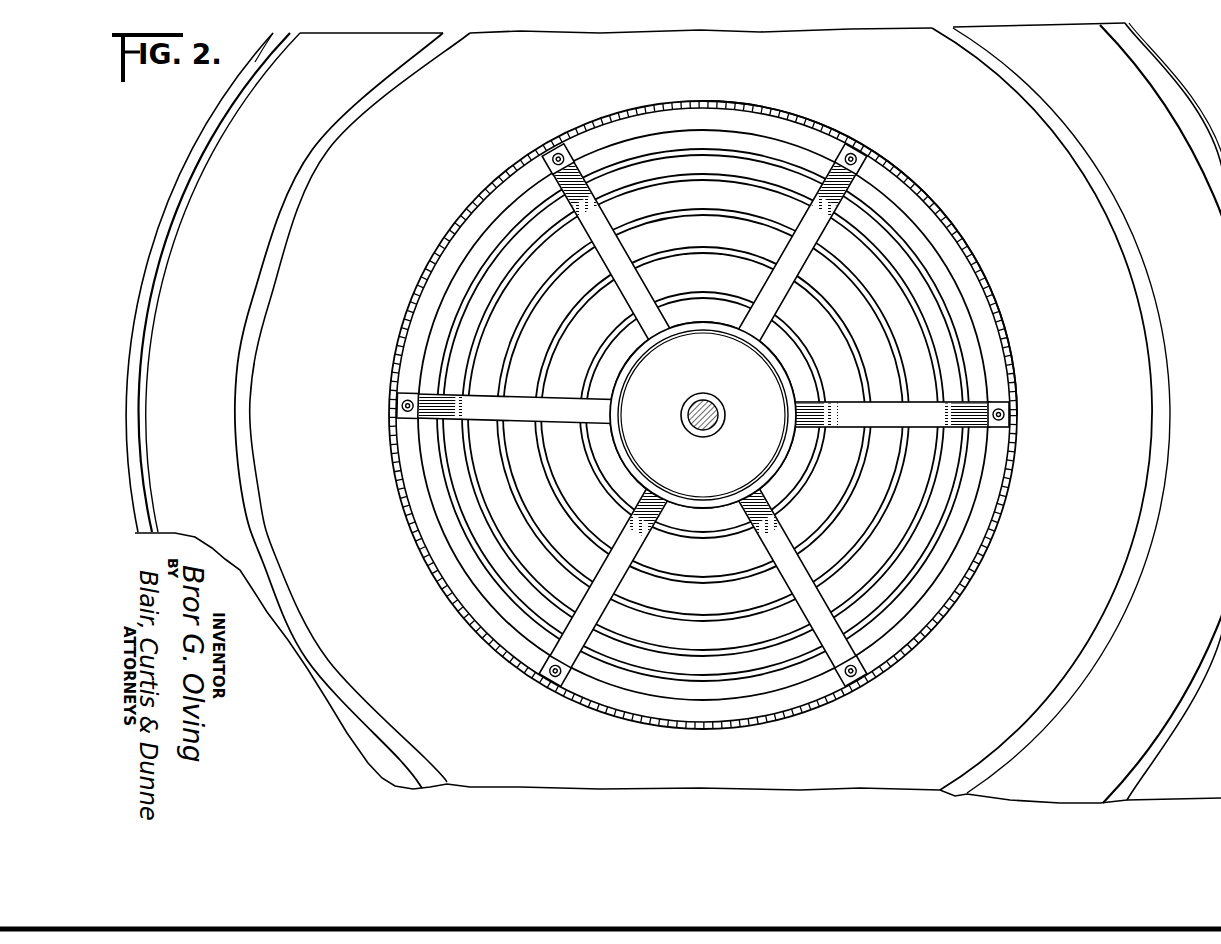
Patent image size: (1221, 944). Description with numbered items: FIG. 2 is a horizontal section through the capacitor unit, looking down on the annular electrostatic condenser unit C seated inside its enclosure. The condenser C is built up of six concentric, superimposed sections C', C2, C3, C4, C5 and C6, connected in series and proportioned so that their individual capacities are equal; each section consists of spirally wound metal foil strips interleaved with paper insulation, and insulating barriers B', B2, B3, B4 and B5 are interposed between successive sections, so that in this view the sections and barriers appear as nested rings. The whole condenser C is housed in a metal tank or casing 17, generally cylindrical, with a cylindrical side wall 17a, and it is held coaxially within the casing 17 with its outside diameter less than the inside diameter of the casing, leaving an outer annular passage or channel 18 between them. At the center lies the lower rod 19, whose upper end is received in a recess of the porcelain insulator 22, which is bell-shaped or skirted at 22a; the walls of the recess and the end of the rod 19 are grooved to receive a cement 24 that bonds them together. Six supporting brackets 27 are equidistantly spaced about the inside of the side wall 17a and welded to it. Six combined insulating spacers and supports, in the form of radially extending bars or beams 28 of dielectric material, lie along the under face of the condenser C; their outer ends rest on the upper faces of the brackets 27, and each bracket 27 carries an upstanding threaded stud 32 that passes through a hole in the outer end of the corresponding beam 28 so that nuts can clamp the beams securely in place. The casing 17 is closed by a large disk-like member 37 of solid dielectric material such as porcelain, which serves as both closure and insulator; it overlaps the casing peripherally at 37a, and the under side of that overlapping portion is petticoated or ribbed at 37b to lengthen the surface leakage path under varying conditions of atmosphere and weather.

The casing 17 is at (964, 214).
The cylindrical side wall 17a is at (1004, 322).
The outer annular passage 18 is at (975, 536).
The lower rod 19 is at (717, 426).
The insulator 22 is at (698, 366).
The skirt of insulator 22a is at (778, 352).
The cement 24 is at (686, 408).
The supporting brackets 27 is at (566, 146).
The insulating spacer beams 28 is at (606, 256).
The threaded stud 32 is at (550, 152).
The combined closure disk and insulator 37 is at (188, 131).
The overlapping portion 37a is at (232, 226).
The petticoated ribs 37b is at (252, 388).
The electrostatic condenser unit C is at (713, 258).
The first condenser section C' is at (693, 415).
The second condenser section C2 is at (691, 415).
The third condenser section C3 is at (692, 415).
The fourth condenser section C4 is at (696, 415).
The fifth condenser section C5 is at (699, 415).
The sixth condenser section C6 is at (700, 415).
The first insulating barrier B' is at (691, 415).
The second insulating barrier B2 is at (551, 492).
The third insulating barrier B3 is at (518, 509).
The fourth insulating barrier B4 is at (494, 517).
The fifth insulating barrier B5 is at (468, 526).